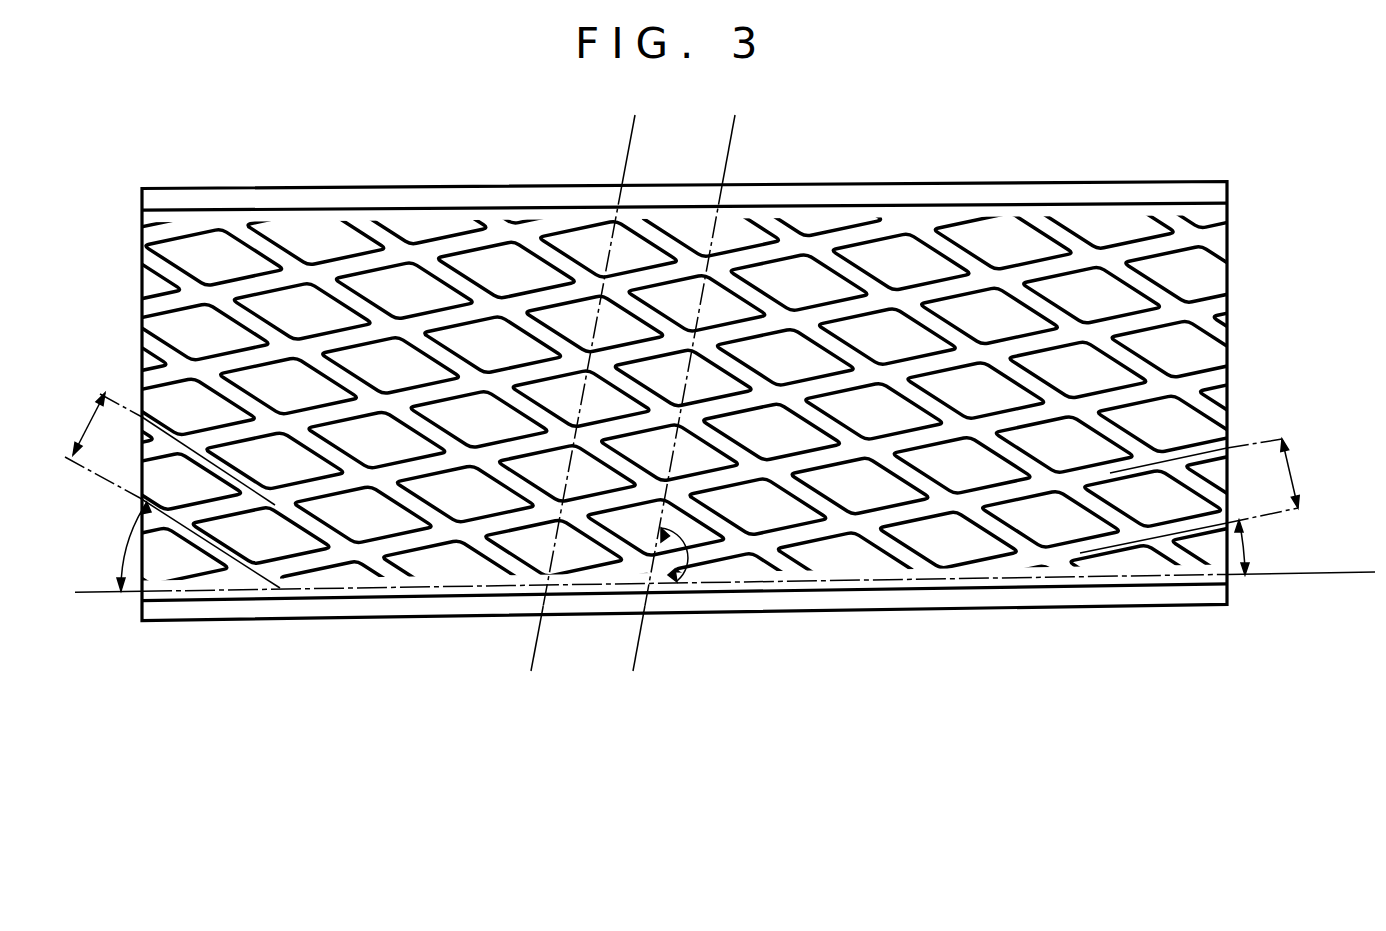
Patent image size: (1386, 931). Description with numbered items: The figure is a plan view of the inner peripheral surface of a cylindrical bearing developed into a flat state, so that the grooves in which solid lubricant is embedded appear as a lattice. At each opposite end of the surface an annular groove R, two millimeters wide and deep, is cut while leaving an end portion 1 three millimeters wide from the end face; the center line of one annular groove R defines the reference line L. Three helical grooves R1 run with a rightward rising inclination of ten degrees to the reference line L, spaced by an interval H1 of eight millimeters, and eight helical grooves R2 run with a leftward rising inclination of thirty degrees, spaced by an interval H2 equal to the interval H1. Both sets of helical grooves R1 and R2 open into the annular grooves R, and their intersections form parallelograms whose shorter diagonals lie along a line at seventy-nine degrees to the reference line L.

The end portion 1 is at (955, 192).
The annular groove R is at (813, 213).
The helical groove R1 is at (1205, 445).
The helical groove R2 is at (150, 410).
The interval H1 is at (1299, 472).
The interval H2 is at (90, 432).
The reference line L is at (721, 580).